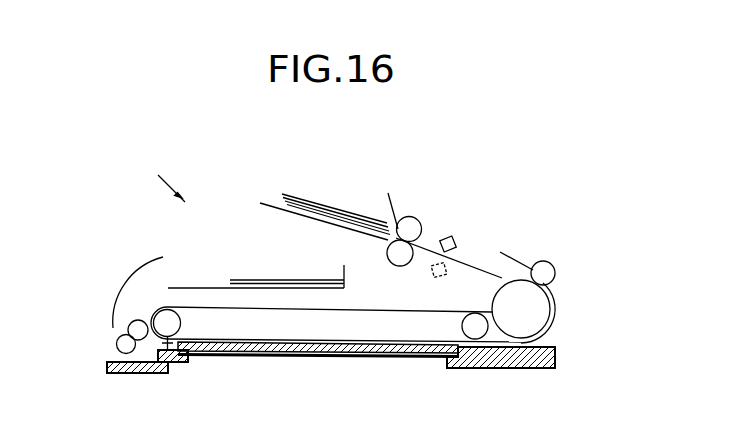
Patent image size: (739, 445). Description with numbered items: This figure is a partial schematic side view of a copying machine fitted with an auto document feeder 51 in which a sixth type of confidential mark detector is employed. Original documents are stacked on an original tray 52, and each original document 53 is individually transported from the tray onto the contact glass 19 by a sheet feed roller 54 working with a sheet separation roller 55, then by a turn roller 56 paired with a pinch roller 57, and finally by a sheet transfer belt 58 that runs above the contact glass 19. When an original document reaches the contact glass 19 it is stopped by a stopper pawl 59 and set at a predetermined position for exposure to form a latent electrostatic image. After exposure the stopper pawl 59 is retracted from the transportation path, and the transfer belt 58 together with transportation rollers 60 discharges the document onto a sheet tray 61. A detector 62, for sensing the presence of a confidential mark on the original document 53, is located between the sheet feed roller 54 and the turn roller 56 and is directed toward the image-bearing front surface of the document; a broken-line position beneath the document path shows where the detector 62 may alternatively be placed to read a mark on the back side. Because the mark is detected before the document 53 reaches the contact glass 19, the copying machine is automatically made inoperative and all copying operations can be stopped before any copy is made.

The contact glass 19 is at (360, 357).
The auto document feeder 51 is at (157, 172).
The original tray 52 is at (271, 205).
The original document 53 is at (307, 201).
The sheet feed roller 54 is at (414, 256).
The sheet separation roller 55 is at (409, 217).
The turn roller 56 is at (543, 315).
The pinch roller 57 is at (553, 266).
The sheet transfer belt 58 is at (258, 355).
The stopper pawl 59 is at (177, 363).
The transportation rollers 60 is at (117, 346).
The sheet tray 61 is at (212, 287).
The detector 62 is at (458, 250).